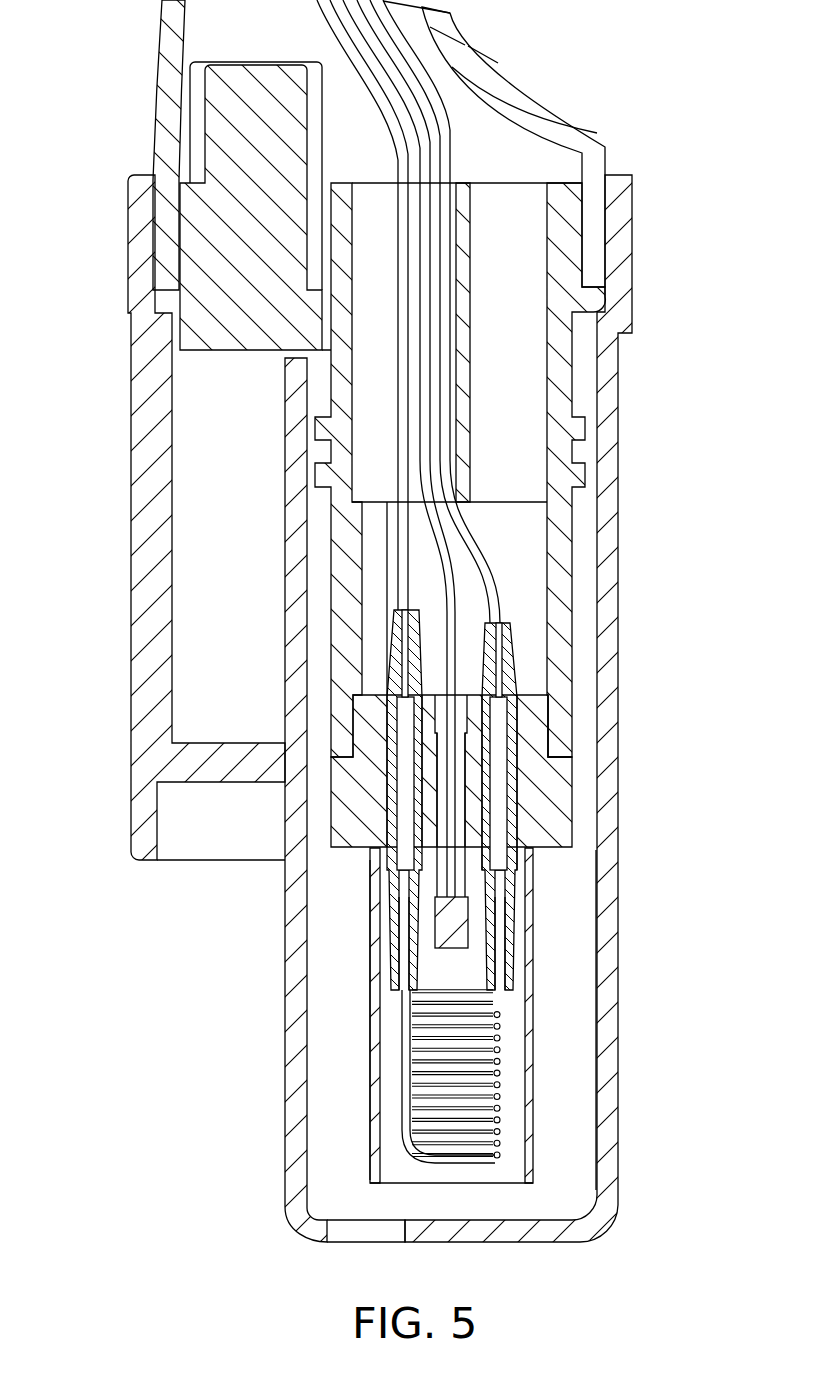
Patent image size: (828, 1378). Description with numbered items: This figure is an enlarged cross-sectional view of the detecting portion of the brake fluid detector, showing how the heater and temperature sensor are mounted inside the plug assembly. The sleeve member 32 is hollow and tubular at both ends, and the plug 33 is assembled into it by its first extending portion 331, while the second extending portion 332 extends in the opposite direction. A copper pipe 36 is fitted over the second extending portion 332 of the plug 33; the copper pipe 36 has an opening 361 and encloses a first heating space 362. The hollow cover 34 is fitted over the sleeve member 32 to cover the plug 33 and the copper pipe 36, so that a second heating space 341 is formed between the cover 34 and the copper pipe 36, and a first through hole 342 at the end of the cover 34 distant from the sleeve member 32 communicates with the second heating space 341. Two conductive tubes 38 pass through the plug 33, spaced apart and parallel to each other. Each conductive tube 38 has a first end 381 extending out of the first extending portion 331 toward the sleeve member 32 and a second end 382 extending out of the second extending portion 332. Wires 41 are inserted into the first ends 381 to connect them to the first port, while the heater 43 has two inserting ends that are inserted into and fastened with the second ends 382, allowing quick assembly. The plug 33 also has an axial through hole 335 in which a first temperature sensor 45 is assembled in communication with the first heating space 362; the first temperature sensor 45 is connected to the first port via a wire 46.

The sleeve member 32 is at (562, 365).
The plug 33 is at (567, 783).
The first extending portion 331 is at (543, 702).
The second extending portion 332 is at (520, 892).
The through hole 335 is at (458, 807).
The cover 34 is at (612, 1018).
The second heating space 341 is at (567, 1082).
The first through hole 342 is at (338, 1230).
The copper pipe 36 is at (373, 1100).
The opening 361 is at (450, 1183).
The first heating space 362 is at (390, 1063).
The conductive tubes 38 is at (392, 785).
The first end 381 is at (398, 642).
The second end 382 is at (397, 960).
The wires 41 is at (405, 455).
The heater 43 is at (500, 1120).
The first temperature sensor 45 is at (452, 945).
The wire 46 is at (452, 608).